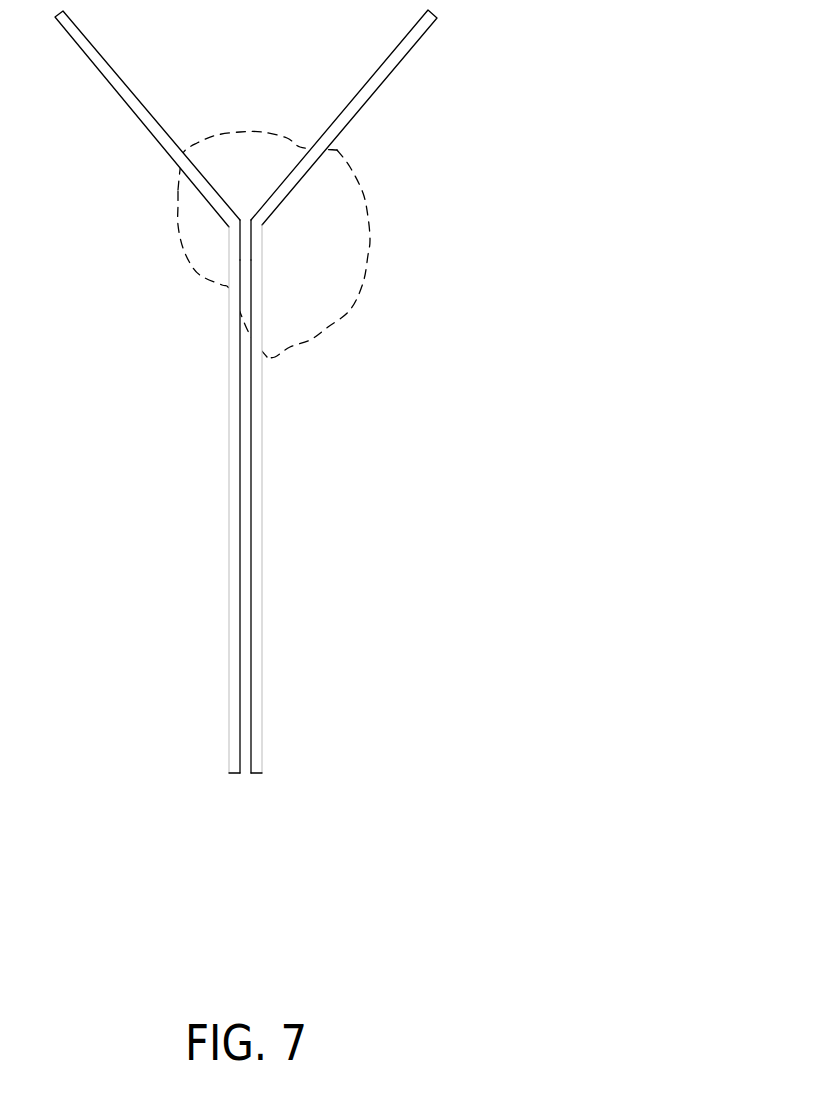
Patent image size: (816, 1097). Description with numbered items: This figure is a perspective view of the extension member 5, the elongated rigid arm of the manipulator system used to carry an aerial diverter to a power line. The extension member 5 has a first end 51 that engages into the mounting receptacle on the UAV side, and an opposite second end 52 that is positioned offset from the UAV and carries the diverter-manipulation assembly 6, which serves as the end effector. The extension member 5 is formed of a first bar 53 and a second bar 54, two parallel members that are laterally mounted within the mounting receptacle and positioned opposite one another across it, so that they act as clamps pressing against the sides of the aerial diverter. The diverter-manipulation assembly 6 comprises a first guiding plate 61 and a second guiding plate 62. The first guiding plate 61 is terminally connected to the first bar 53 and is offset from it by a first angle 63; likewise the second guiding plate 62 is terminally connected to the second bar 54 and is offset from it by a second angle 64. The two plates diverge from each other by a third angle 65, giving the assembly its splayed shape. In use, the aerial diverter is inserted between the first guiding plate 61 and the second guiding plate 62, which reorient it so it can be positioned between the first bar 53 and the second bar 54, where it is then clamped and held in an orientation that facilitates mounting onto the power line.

The extension member 5 is at (377, 535).
The first end 51 is at (272, 228).
The stem end 52 is at (305, 762).
The first bar 53 is at (235, 558).
The second bar 54 is at (255, 502).
The diverter-manipulation assembly 6 is at (352, 391).
The first guiding plate 61 is at (123, 95).
The right branch arm 62 is at (413, 38).
The first angle 63 is at (192, 262).
The second angle 64 is at (328, 328).
The third angle 65 is at (245, 131).